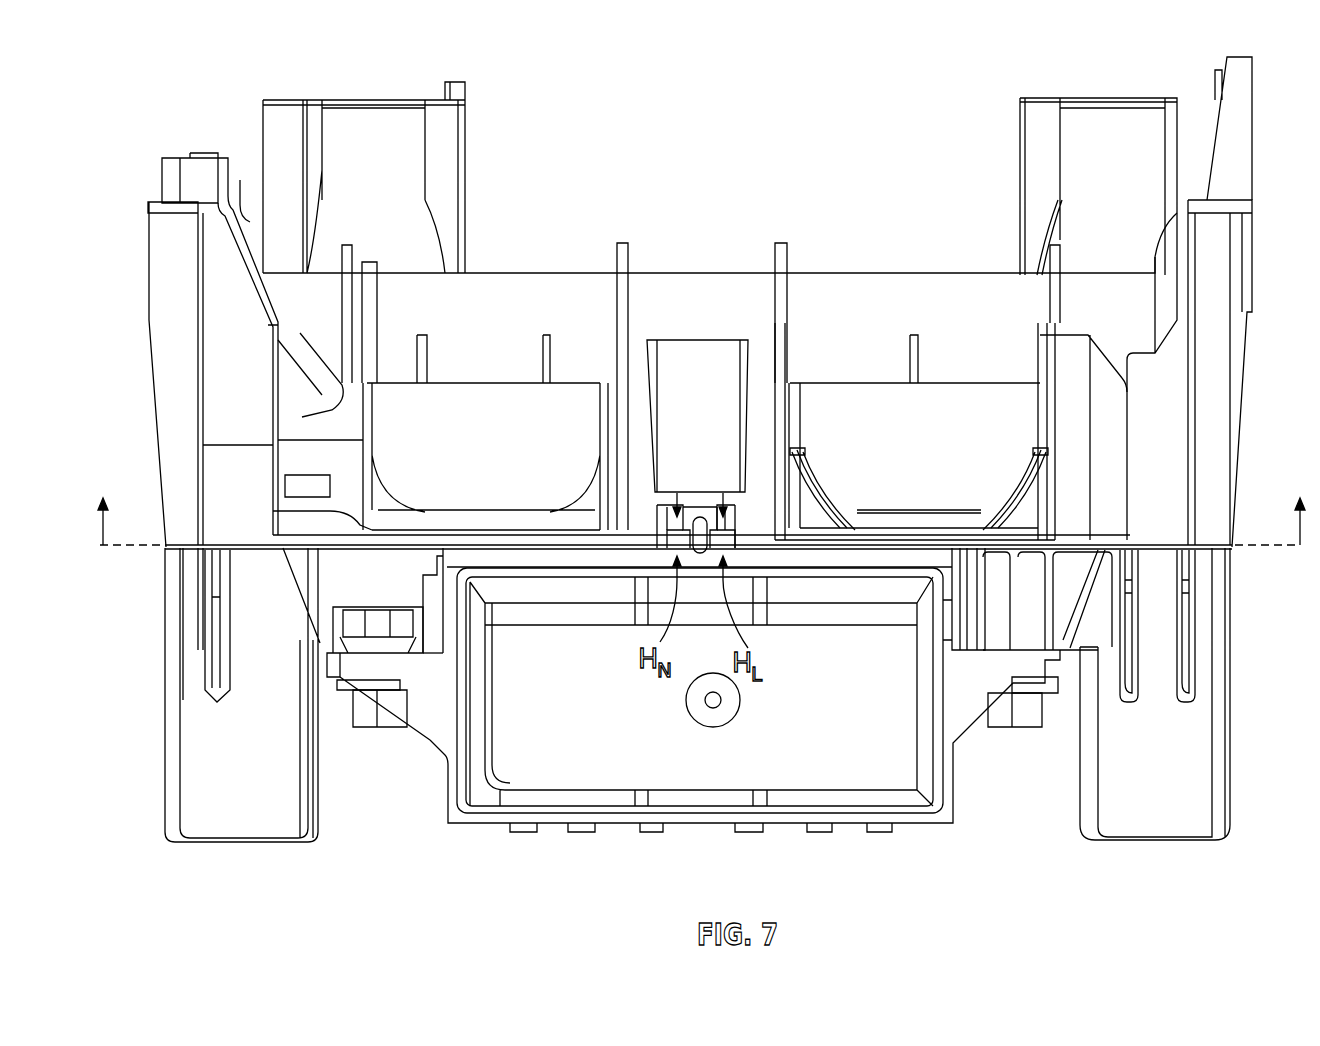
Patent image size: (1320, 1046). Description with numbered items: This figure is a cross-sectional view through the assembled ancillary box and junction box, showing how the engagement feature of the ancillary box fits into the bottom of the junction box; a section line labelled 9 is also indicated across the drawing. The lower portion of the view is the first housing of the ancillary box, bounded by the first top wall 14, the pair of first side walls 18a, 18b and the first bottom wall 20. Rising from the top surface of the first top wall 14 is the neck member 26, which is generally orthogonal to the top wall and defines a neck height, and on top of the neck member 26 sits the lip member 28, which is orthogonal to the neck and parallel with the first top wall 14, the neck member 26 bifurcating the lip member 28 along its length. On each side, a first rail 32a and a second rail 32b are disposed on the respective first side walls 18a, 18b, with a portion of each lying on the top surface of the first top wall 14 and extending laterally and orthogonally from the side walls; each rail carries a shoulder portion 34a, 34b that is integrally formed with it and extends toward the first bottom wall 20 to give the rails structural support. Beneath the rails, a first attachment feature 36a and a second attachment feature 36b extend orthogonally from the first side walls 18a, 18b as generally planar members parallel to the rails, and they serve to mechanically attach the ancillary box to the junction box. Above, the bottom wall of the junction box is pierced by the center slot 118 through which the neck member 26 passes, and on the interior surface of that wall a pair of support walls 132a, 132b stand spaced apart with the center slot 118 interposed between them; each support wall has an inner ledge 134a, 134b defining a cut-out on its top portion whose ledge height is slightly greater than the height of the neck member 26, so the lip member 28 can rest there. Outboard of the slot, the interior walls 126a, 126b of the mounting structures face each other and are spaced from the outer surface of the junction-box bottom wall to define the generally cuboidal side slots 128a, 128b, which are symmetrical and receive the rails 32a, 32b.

The section line 9- 9 is at (702, 504).
The first top wall 14 is at (497, 545).
The first side wall 18a is at (955, 770).
The first side wall 18b is at (445, 783).
The first bottom wall 20 is at (848, 825).
The neck member 26 is at (665, 528).
The lip member 28 is at (720, 545).
The first rail 32a is at (960, 563).
The second rail 32b is at (430, 565).
The shoulder portion 34a is at (952, 608).
The shoulder portion 34b is at (440, 602).
The first attachment feature 36a is at (1062, 692).
The second attachment feature 36b is at (362, 692).
The center slot 118 is at (700, 485).
The interior wall 126a is at (968, 640).
The interior wall 126b is at (447, 637).
The side slot 128a is at (966, 567).
The side slot 128b is at (402, 570).
The support wall 132a is at (762, 515).
The support wall 132b is at (640, 500).
The inner ledge 134a is at (740, 548).
The inner ledge 134b is at (657, 545).